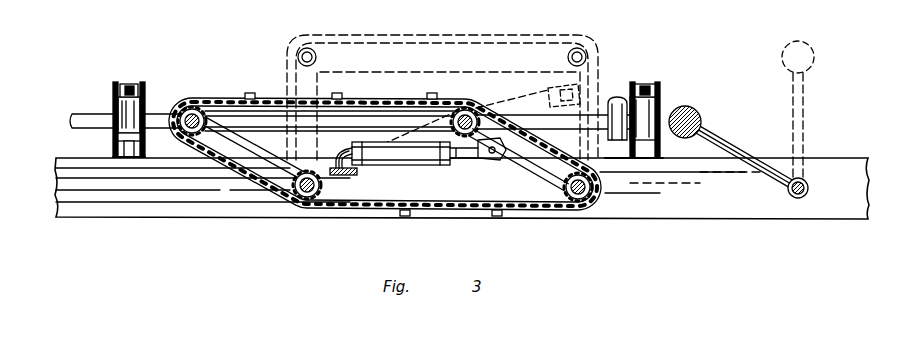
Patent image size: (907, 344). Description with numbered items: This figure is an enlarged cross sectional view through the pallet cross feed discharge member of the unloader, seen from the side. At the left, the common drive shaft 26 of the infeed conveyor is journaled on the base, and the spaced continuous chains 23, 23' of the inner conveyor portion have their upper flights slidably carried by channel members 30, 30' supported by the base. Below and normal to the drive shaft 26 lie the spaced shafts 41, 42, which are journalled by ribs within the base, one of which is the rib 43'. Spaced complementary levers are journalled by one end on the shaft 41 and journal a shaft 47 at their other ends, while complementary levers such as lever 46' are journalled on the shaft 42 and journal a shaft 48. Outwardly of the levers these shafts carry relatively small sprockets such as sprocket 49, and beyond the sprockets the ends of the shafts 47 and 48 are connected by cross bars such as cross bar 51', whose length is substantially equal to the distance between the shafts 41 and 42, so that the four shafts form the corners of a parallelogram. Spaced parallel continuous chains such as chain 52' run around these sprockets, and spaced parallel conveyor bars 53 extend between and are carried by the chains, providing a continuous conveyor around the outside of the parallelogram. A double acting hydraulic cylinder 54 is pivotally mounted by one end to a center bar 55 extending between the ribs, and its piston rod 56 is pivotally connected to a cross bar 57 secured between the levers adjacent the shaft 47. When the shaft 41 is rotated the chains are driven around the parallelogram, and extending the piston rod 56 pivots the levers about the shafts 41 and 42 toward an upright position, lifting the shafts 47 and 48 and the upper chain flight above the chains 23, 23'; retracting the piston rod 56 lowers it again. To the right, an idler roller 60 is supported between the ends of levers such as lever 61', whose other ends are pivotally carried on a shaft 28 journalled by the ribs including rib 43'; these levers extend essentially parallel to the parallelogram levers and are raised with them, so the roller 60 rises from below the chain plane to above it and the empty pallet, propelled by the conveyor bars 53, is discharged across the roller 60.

The continuous chain 23 is at (140, 75).
The channel member 30 is at (141, 112).
The drive shaft 26 is at (95, 114).
The shaft 48 is at (200, 106).
The sprocket 49 is at (246, 101).
The conveyor bars 53 is at (262, 84).
The lever 46' is at (252, 142).
The continuous chain 52' is at (413, 106).
The cross bar 51' is at (392, 113).
The shaft 47 is at (470, 108).
The shaft 42 is at (322, 188).
The center bar 55 is at (358, 172).
The double acting hydraulic cylinder 54 is at (418, 165).
The piston rod 56 is at (462, 160).
The cross bar 57 is at (497, 160).
The shaft 41 is at (595, 196).
The channel member 30' is at (634, 114).
The continuous chain 23' is at (660, 76).
The idler roller 60 is at (696, 110).
The lever 61' is at (771, 130).
The rib 43' is at (462, 176).
The shaft 28 is at (805, 194).